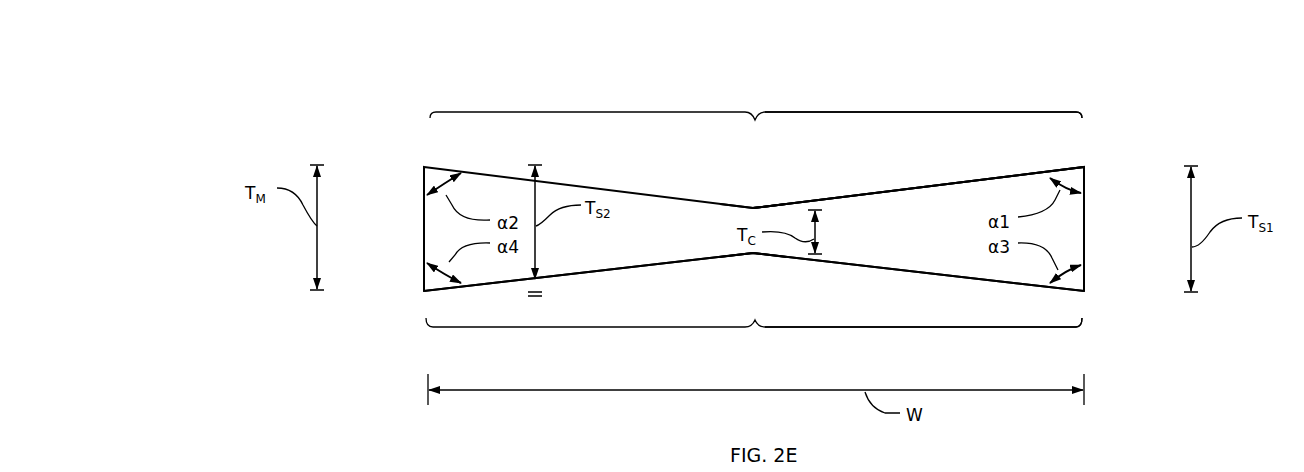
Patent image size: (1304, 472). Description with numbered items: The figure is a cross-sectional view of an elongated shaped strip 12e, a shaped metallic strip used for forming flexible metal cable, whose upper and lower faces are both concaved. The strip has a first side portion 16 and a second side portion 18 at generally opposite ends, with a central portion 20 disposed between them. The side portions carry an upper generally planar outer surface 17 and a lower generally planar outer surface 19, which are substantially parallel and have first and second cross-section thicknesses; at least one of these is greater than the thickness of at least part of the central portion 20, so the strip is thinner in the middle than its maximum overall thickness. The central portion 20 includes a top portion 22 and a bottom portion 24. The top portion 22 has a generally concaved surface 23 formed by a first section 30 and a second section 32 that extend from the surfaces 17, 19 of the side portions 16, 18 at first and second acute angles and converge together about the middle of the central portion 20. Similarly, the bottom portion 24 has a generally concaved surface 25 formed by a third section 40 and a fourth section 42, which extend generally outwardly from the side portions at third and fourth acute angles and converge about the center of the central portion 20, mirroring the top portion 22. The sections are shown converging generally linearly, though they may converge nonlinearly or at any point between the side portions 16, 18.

The elongated shaped strip 12e is at (267, 82).
The first side portion 16 is at (1084, 139).
The upper generally planar outer surface 17 is at (1085, 245).
The second side portion 18 is at (412, 142).
The lower generally planar outer surface 19 is at (423, 235).
The central portion 20 is at (748, 184).
The top portion 22 is at (825, 197).
The concaved surface 23 is at (891, 189).
The bottom portion 24 is at (851, 261).
The concaved surface 25 is at (655, 268).
The first section 30 is at (920, 112).
The second section 32 is at (600, 112).
The third section 40 is at (920, 327).
The fourth section 42 is at (593, 327).